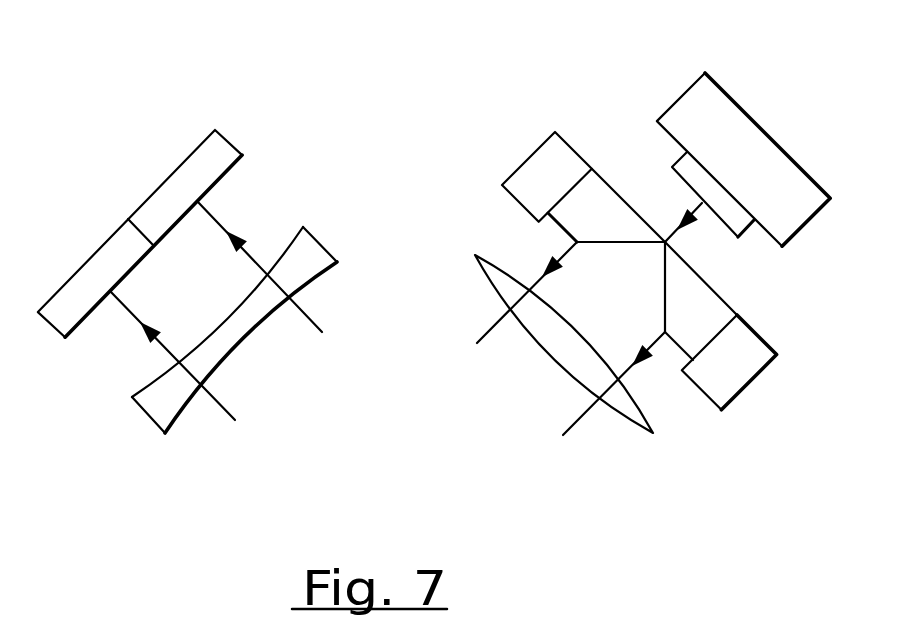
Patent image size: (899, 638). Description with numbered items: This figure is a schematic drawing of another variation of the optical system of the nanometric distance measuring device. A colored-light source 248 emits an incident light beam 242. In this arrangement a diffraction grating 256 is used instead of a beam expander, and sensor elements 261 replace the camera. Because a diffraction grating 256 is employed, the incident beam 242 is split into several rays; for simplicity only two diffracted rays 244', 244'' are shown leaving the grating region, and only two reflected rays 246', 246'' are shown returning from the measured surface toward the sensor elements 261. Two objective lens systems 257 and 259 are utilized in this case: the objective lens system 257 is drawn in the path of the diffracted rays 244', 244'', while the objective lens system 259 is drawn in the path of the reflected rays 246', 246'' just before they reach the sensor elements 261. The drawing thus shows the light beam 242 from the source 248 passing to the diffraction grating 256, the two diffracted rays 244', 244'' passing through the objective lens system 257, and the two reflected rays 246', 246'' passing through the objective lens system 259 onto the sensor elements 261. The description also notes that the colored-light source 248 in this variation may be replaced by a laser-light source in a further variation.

The light beam 242 is at (702, 203).
The diffracted ray 244' is at (497, 270).
The diffracted ray 244'' is at (668, 414).
The reflected ray 246' is at (286, 220).
The reflected ray 246'' is at (126, 361).
The colored-light source 248 is at (750, 153).
The diffraction grating 256 is at (538, 160).
The objective lens system 257 is at (552, 333).
The objective lens system 259 is at (178, 397).
The sensor elements 261 is at (170, 197).